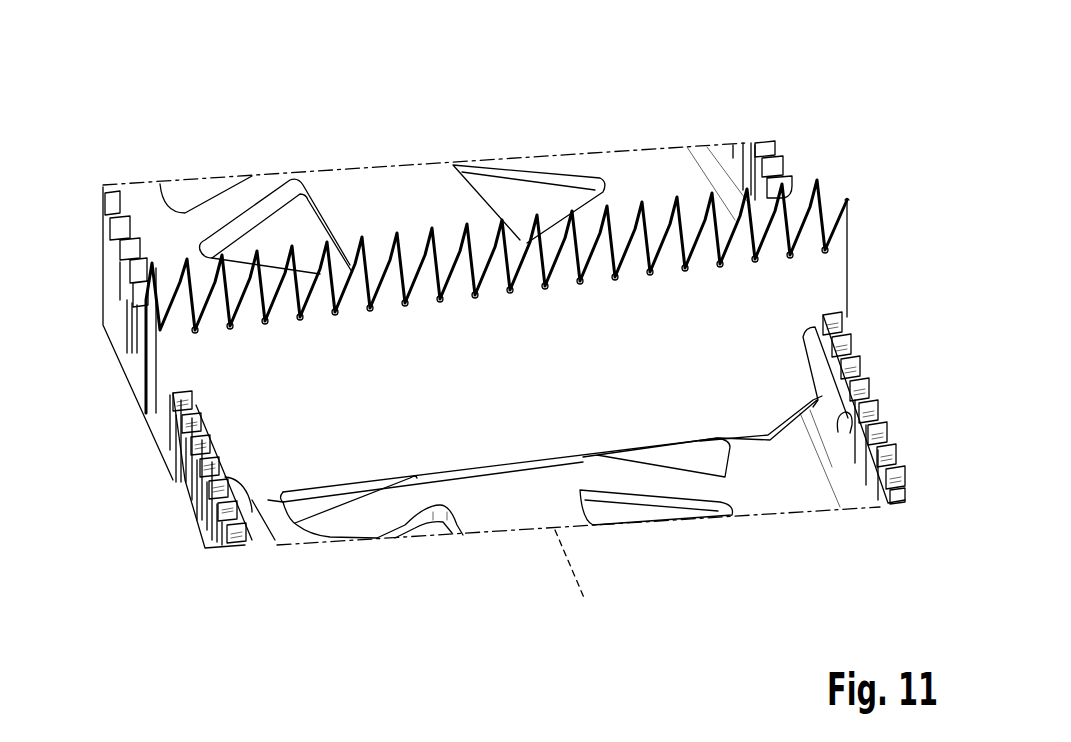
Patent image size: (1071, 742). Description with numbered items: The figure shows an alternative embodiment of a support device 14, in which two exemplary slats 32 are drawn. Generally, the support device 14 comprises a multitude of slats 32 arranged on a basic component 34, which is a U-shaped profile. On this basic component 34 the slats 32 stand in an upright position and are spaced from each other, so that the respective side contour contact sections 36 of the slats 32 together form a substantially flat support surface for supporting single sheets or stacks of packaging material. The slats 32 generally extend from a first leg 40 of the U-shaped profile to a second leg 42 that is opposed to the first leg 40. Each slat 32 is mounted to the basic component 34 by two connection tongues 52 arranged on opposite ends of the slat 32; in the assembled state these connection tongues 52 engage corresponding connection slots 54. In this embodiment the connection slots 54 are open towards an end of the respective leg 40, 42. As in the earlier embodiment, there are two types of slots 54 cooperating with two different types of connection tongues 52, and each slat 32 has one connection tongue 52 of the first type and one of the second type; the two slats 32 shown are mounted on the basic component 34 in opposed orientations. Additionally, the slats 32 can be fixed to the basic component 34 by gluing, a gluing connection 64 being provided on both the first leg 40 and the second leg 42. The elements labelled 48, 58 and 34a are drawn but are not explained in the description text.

The support device 14 is at (790, 122).
The side contour contact section 36 is at (808, 172).
The slots / openings in plate 48 is at (274, 270).
The slat 32 is at (165, 312).
The connection tongue 52 is at (162, 424).
The connection slot 54 is at (178, 453).
The first leg 40 is at (243, 543).
The second leg 42 is at (897, 477).
The gluing connection 64 is at (250, 507).
The lower longitudinal bar 58 is at (287, 503).
The basic component 34 is at (742, 495).
The axis of tab 34a is at (572, 565).